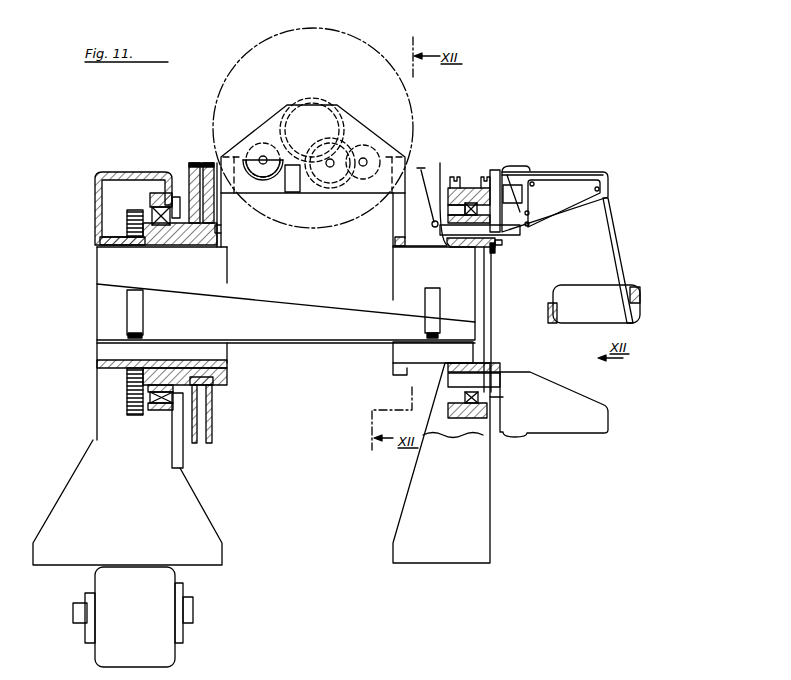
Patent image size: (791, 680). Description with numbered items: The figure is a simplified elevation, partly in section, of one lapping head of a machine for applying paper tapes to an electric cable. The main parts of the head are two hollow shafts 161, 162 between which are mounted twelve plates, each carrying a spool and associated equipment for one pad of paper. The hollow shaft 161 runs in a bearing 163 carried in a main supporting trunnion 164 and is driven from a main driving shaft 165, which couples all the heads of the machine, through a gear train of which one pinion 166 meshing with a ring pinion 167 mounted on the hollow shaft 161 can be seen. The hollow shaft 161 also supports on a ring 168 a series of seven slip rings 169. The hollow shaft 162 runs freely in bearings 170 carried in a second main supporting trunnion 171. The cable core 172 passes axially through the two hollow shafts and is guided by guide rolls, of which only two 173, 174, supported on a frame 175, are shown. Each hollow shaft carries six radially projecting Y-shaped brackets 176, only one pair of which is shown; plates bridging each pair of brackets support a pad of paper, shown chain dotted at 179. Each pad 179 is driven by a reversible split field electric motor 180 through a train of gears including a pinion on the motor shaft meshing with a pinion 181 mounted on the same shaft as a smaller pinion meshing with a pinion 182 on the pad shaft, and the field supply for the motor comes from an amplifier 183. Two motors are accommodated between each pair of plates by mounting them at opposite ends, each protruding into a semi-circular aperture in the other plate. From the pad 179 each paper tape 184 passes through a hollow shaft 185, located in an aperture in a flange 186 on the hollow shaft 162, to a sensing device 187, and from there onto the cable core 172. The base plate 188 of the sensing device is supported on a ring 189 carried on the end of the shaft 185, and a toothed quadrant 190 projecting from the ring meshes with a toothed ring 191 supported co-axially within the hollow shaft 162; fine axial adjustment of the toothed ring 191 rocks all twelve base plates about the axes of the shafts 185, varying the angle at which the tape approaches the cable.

The hollow shaft 161 is at (170, 248).
The hollow shaft 162 is at (397, 253).
The bearing 163 is at (152, 210).
The main supporting trunnion 164 is at (156, 172).
The main driving shaft 165 is at (78, 612).
The pinion 166 is at (130, 412).
The ring pinion 167 is at (130, 387).
The ring 168 is at (192, 185).
The slip rings 169 is at (204, 163).
The bearings 170 is at (470, 188).
The second main supporting trunnion 171 is at (494, 172).
The cable core 172 is at (600, 322).
The guide roll 173 is at (143, 311).
The guide roll 174 is at (440, 312).
The frame 175 is at (315, 341).
The Y-shaped brackets 176 is at (232, 217).
The pad of paper 179 is at (242, 70).
The reversible split field electric motor 180 is at (260, 145).
The pinion 181 is at (338, 180).
The pinion 182 is at (305, 103).
The amplifier 183 is at (292, 192).
The paper tape 184 is at (622, 268).
The hollow shaft 185 is at (470, 247).
The flange 186 is at (441, 210).
The sensing device 187 is at (614, 177).
The base plate 188 is at (578, 207).
The ring 189 is at (500, 246).
The toothed quadrant 190 is at (494, 256).
The toothed ring 191 is at (487, 262).